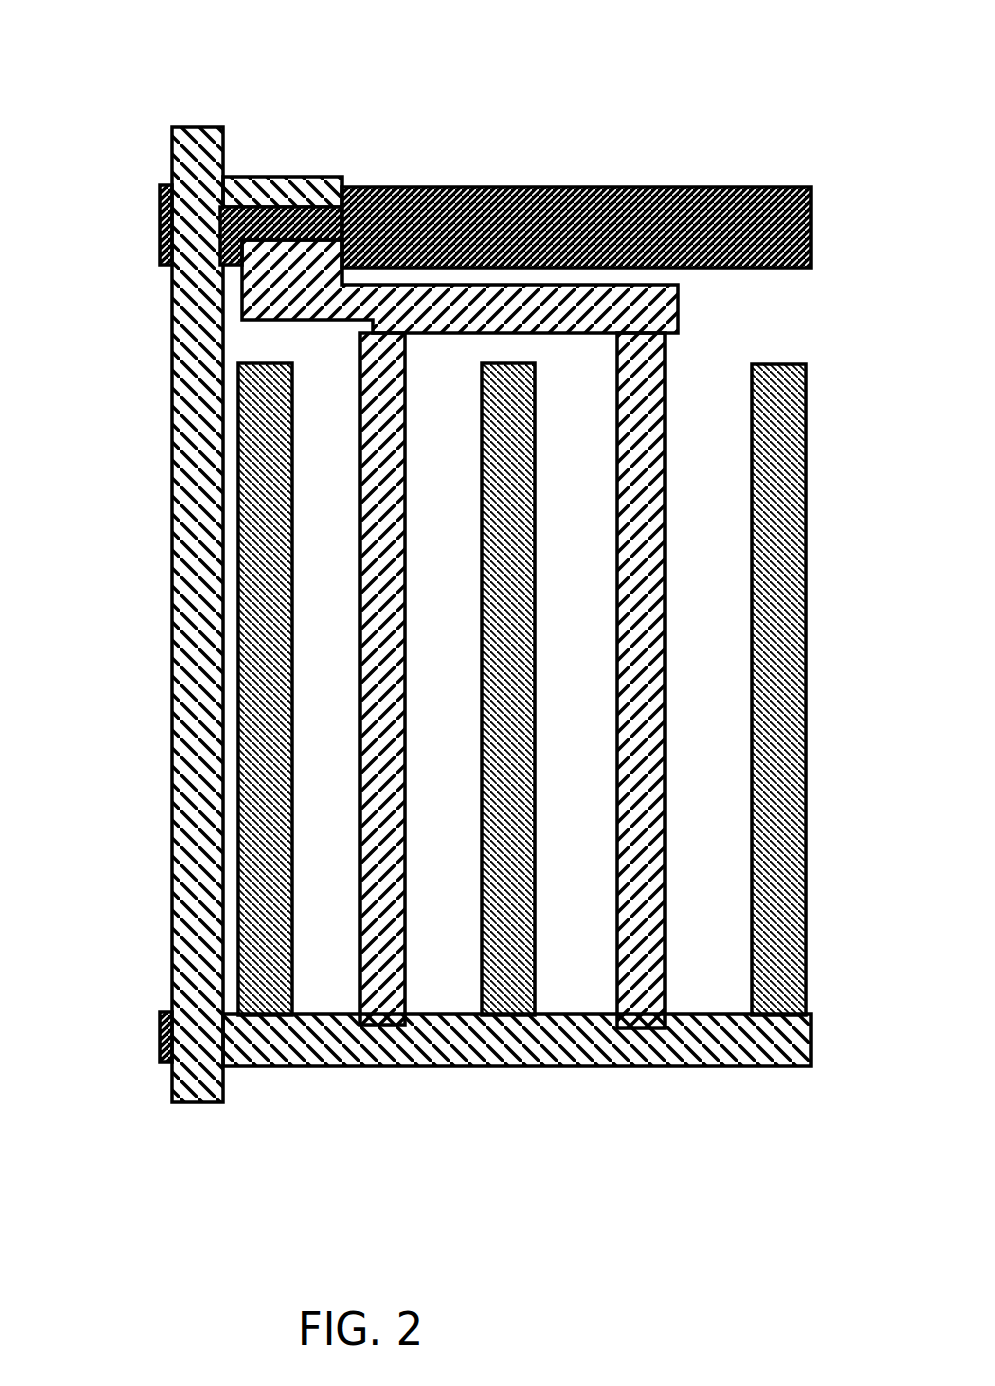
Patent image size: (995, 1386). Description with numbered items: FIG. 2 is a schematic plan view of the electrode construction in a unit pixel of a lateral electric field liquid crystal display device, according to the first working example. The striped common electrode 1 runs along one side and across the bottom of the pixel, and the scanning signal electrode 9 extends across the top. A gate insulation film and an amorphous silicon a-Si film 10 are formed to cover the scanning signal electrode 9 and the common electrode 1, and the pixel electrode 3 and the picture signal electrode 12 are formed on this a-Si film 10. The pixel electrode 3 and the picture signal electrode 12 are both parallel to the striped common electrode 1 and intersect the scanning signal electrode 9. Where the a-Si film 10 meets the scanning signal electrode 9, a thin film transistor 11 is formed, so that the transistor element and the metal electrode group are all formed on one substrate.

The common electrode 1 is at (442, 1062).
The pixel electrode 3 is at (665, 940).
The scanning signal electrode 9 is at (525, 173).
The amorphous Si 10 is at (300, 177).
The thin film transistor 11 is at (365, 165).
The picture signal electrode 12 is at (180, 650).